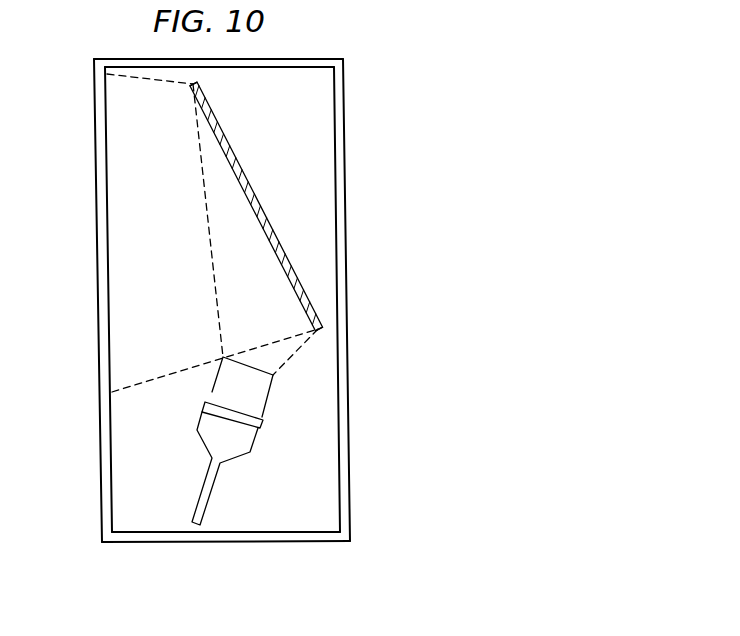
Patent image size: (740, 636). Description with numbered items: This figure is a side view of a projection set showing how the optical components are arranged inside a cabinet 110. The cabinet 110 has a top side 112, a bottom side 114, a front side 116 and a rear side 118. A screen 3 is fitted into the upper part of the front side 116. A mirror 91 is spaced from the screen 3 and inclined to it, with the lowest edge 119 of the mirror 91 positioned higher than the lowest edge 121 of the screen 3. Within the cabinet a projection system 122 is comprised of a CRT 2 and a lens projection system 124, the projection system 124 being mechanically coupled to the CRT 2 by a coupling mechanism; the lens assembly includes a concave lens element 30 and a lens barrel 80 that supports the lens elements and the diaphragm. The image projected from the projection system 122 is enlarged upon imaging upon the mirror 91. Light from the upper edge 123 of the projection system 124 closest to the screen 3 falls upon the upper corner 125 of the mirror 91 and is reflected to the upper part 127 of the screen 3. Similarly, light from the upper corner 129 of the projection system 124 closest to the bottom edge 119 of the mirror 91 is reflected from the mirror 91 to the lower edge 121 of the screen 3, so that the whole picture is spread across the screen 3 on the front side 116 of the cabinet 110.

The CRT 2 is at (242, 448).
The screen 3 is at (93, 260).
The concave lens element 30 is at (263, 425).
The lens barrel 80 is at (267, 388).
The mirror 91 is at (262, 197).
The cabinet 110 is at (362, 192).
The top side 112 is at (302, 59).
The bottom side 114 is at (287, 542).
The front side 116 is at (100, 452).
The rear side 118 is at (348, 397).
The lowest edge of the mirror 119 is at (323, 331).
The lowest edge of the screen 121 is at (104, 391).
The projection system 122 is at (185, 455).
The upper edge of the projection system 123 is at (222, 355).
The projection system 124 is at (203, 383).
The upper corner of the mirror 125 is at (190, 88).
The upper part of the screen 127 is at (97, 75).
The upper corner of the projection system 129 is at (275, 374).